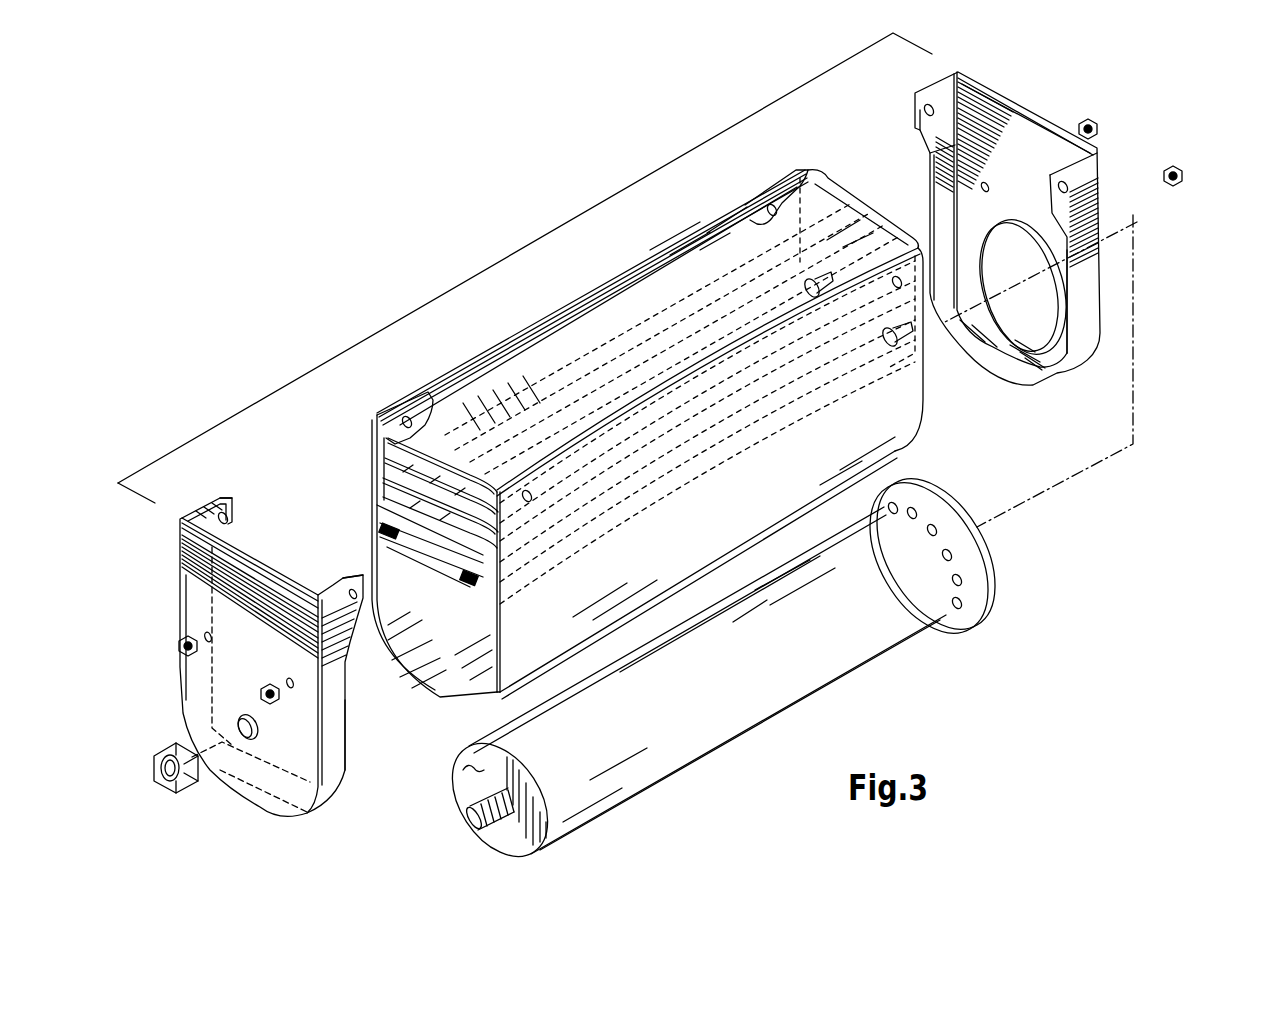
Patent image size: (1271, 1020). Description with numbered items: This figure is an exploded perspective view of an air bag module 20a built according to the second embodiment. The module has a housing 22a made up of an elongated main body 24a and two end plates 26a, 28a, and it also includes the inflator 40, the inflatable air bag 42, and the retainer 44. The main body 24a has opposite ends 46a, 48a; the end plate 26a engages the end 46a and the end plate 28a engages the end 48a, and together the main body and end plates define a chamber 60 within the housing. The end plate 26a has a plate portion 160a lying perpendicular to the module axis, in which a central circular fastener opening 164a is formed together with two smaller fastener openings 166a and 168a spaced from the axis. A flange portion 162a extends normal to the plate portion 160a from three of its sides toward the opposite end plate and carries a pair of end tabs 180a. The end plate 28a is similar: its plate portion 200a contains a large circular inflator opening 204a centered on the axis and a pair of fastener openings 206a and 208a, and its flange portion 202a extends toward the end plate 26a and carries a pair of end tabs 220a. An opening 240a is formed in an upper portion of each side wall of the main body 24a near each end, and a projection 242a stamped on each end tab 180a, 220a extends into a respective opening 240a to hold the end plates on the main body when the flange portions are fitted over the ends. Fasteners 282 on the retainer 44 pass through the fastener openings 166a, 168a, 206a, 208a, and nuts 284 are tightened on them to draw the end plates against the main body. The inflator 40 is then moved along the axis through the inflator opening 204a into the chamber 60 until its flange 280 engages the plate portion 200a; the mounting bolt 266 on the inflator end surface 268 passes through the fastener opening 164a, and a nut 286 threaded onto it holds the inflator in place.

The air bag module 20a is at (572, 122).
The housing 22a is at (511, 250).
The main body 24a is at (735, 196).
The end plate 26a is at (222, 800).
The end plate 28a is at (1035, 98).
The inflator 40 is at (852, 688).
The inflatable air bag 42 is at (612, 300).
The retainer 44 is at (432, 546).
The end 46a is at (372, 433).
The end 48a is at (802, 186).
The chamber 60 is at (464, 647).
The plate portion 160a is at (230, 697).
The flange portion 162a is at (336, 727).
The fastener opening 164a is at (238, 722).
The fastener opening 166a is at (205, 633).
The fastener opening 168a is at (293, 687).
The end tab 180a is at (222, 494).
The plate portion 200a is at (1028, 160).
The flange portion 202a is at (1086, 285).
The inflator opening 204a is at (1000, 290).
The fastener opening 206a is at (981, 189).
The fastener opening 208a is at (1100, 243).
The end tab 220a is at (926, 126).
The opening 240a is at (770, 204).
The projection 242a is at (932, 105).
The mounting bolt 266 is at (470, 816).
The end surface 268 is at (463, 770).
The flange 280 is at (975, 610).
The fasteners 282 is at (398, 533).
The nuts 284 is at (1098, 126).
The nut 286 is at (150, 772).